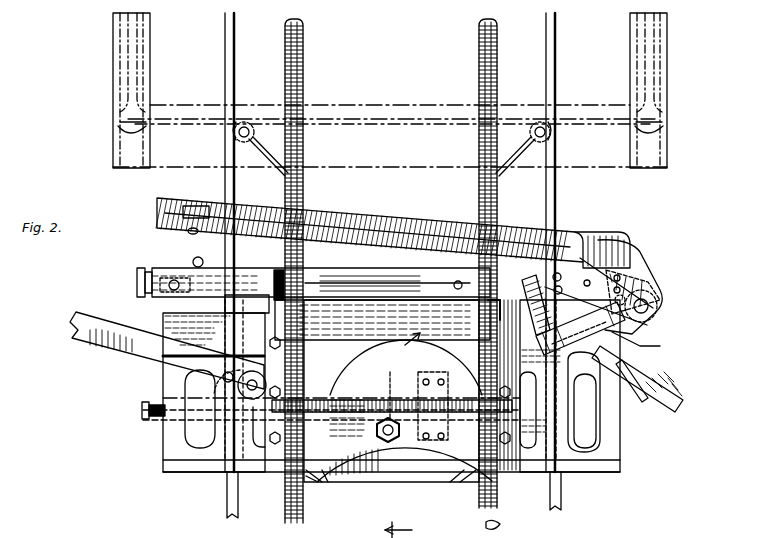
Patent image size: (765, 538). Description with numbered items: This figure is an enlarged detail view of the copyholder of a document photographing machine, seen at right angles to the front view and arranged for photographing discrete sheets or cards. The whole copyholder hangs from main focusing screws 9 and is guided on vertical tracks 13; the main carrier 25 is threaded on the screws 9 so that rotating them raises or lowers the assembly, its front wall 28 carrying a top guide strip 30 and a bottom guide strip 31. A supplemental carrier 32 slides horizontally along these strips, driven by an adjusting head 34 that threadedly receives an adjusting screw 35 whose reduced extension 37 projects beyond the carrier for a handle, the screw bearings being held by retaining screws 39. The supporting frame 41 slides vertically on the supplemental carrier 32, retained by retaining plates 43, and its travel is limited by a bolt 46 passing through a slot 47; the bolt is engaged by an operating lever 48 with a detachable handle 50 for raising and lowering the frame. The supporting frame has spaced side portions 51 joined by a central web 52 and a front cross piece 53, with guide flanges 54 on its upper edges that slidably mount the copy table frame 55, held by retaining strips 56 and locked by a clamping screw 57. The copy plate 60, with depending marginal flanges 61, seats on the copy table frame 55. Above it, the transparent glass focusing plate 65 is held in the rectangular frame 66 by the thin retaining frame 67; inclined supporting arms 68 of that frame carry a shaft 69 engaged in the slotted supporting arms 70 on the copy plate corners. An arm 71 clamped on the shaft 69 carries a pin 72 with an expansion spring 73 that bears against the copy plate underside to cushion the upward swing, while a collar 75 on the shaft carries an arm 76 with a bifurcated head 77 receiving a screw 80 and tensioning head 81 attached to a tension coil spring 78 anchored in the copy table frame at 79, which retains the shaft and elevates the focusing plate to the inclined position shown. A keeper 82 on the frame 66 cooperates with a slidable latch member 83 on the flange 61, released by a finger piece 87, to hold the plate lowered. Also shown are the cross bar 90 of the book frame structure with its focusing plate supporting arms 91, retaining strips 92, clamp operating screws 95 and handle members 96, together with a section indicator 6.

The section line 6 is at (403, 530).
The main focusing screws 9 is at (303, 62).
The vertical tracks 13 is at (229, 66).
The main carrier 25 is at (160, 424).
The front wall 28 is at (606, 448).
The top guide strip 30 is at (175, 326).
The bottom guide strip 31 is at (210, 472).
The supplemental carrier 32 is at (410, 483).
The adjusting head 34 is at (436, 372).
The adjusting screw 35 is at (406, 388).
The reduced extension 37 is at (156, 402).
The retaining screw 39 is at (585, 411).
The supporting frame 41 is at (408, 341).
The retaining plates 43 is at (394, 495).
The bolt 46 is at (378, 430).
The slot 47 is at (419, 406).
The operating lever 48 is at (244, 392).
The detachable handle 50 is at (116, 344).
The side portions 51 is at (322, 482).
The central web 52 is at (380, 336).
The front cross piece 53 is at (328, 276).
The guide flanges 54 is at (486, 306).
The copy table frame 55 is at (277, 270).
The retaining strips 56 is at (486, 322).
The clamping screw 57 is at (248, 327).
The copy plate 60 is at (208, 266).
The marginal flanges 61 is at (358, 278).
The transparent glass focusing plate 65 is at (415, 124).
The rectangular frame 66 is at (426, 232).
The retaining frame 67 is at (400, 240).
The supporting arms 68 is at (634, 268).
The shaft 69 is at (657, 306).
The supporting arms 70 is at (628, 278).
The arm 71 is at (637, 341).
The pin 72 is at (576, 264).
The expansion spring 73 is at (586, 283).
The collar 75 is at (624, 298).
The arm 76 is at (630, 370).
The bifurcated head 77 is at (644, 380).
The tension coil spring 78 is at (584, 402).
The spring anchorage opening 79 is at (529, 285).
The screw 80 is at (612, 354).
The tensioning head 81 is at (638, 400).
The keeper 82 is at (196, 208).
The slidable latch member 83 is at (196, 264).
The finger piece 87 is at (136, 282).
The cross bar 90 is at (359, 102).
The focusing plate supporting arms 91 is at (132, 80).
The strips 92 is at (128, 130).
The clamp operating screw 95 is at (239, 138).
The manual operating handle member 96 is at (246, 122).